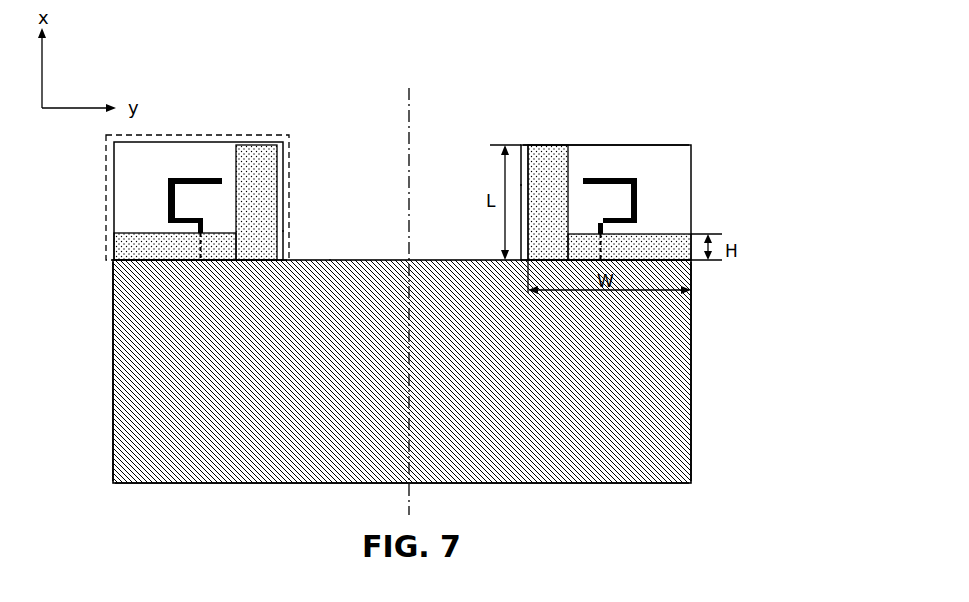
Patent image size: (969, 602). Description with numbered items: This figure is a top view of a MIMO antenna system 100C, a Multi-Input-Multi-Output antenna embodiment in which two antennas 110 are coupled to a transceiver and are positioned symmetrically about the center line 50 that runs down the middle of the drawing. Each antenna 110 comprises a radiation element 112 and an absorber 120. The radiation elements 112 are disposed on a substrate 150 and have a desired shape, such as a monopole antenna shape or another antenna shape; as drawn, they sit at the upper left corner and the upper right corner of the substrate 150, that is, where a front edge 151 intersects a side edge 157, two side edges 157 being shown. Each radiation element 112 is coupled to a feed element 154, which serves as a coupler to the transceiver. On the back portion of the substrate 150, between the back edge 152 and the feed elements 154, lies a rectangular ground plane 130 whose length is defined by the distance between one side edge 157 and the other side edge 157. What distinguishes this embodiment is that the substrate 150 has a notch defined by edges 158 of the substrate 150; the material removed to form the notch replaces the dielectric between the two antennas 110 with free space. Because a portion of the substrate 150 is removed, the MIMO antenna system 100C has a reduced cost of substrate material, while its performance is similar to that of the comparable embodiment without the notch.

The MIMO antenna system 100C is at (361, 54).
The center line 50 is at (410, 120).
The antenna 110 is at (184, 135).
The radiation element 112 is at (169, 178).
The absorber 120 is at (262, 146).
The ground plane 130 is at (678, 350).
The substrate 150 is at (130, 168).
The front edge 151 is at (610, 145).
The back edge 152 is at (520, 484).
The feed element 154 is at (200, 264).
The side edge 157 is at (112, 396).
The edge 158 is at (284, 230).